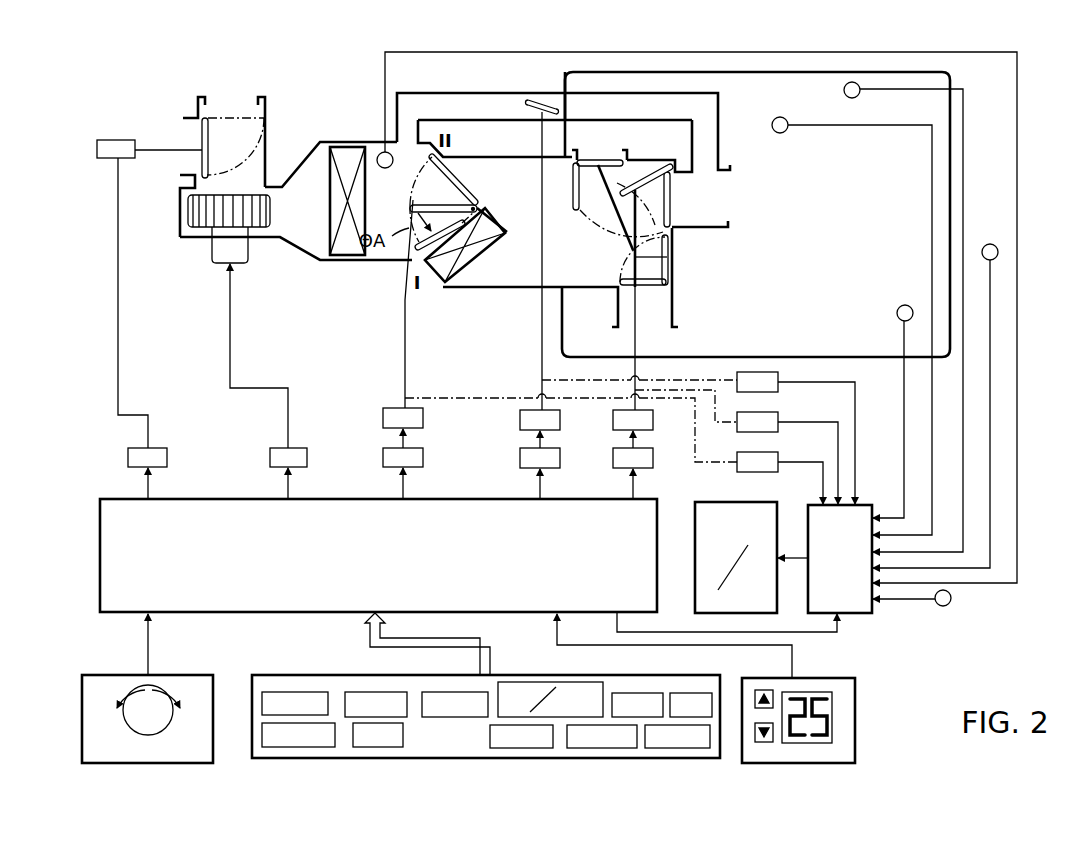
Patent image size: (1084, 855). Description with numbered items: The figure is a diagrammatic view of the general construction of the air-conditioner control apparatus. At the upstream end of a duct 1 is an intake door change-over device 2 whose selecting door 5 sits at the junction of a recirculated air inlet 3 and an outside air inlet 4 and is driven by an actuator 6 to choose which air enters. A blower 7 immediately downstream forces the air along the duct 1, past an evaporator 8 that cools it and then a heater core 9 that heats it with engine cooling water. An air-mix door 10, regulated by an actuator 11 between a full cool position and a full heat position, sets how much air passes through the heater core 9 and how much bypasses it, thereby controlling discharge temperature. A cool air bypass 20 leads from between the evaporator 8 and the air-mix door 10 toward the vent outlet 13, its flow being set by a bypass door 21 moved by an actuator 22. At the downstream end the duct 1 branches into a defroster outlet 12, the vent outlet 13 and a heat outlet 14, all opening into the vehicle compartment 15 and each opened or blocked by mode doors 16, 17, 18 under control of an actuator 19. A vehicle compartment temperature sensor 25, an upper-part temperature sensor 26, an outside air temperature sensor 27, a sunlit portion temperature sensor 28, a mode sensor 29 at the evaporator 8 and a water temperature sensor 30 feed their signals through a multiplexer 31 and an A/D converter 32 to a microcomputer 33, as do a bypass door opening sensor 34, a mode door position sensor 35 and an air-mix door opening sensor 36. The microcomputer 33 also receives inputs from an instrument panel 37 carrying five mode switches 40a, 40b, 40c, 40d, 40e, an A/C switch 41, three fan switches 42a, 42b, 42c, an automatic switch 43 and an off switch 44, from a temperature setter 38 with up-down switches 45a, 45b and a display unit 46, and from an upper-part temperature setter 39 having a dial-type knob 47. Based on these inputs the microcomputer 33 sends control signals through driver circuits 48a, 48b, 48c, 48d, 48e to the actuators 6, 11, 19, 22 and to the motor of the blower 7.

The duct 1 is at (312, 152).
The intake door change-over device 2 is at (248, 106).
The recirculated air inlet 3 is at (187, 161).
The outside air inlet 4 is at (222, 108).
The selecting door 5 is at (198, 137).
The actuator 6 is at (112, 138).
The blower 7 is at (197, 215).
The evaporator 8 is at (340, 150).
The heater core 9 is at (444, 282).
The air-mix door 10 is at (445, 205).
The actuator 11 is at (398, 409).
The defroster outlet 12 is at (612, 152).
The vent outlet 13 is at (708, 214).
The heat outlet 14 is at (658, 307).
The vehicle compartment 15 is at (950, 80).
The mode door 16 is at (586, 158).
The mode door 17 is at (673, 183).
The mode door 18 is at (673, 262).
The actuator 19 is at (613, 421).
The cool air bypass 20 is at (471, 93).
The bypass door 21 is at (532, 100).
The actuator 22 is at (520, 421).
The vehicle compartment temperature sensor 25 is at (900, 306).
The upper-part temperature sensor 26 is at (858, 96).
The outside air temperature sensor 27 is at (990, 244).
The sunlit portion temperature sensor 28 is at (781, 117).
The mode sensor 29 is at (381, 152).
The water temperature sensor 30 is at (947, 606).
The multiplexer 31 is at (862, 616).
The A/D converter 32 is at (712, 506).
The microcomputer 33 is at (100, 570).
The bypass door opening sensor 34 is at (778, 390).
The mode door position sensor 35 is at (778, 430).
The air-mix door opening sensor 36 is at (778, 470).
The instrument panel 37 is at (706, 758).
The temperature setter 38 is at (857, 736).
The upper-part temperature setter 39 is at (212, 752).
The manual switch 40a is at (296, 692).
The manual switch 40b is at (396, 692).
The manual switch 40c is at (469, 692).
The manual switch 40d is at (562, 682).
The manual switch 40e is at (638, 693).
The A/C switch 41 is at (685, 693).
The fan switch 42a is at (512, 748).
The fan switch 42b is at (592, 748).
The fan switch 42c is at (658, 748).
The automatic switch 43 is at (292, 747).
The off switch 44 is at (383, 747).
The up-down switch 45a is at (764, 690).
The up-down switch 45b is at (764, 742).
The display unit 46 is at (823, 743).
The knob 47 is at (158, 700).
The driver circuit 48a is at (167, 462).
The driver circuit 48b is at (423, 462).
The driver circuit 48c is at (618, 462).
The driver circuit 48d is at (523, 462).
The driver circuit 48e is at (307, 462).